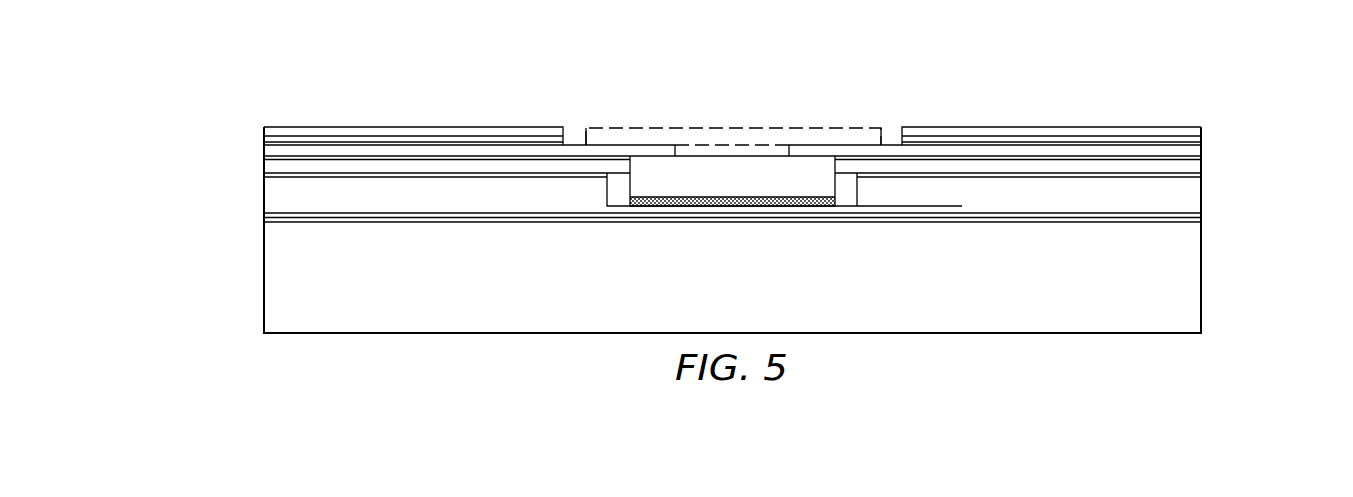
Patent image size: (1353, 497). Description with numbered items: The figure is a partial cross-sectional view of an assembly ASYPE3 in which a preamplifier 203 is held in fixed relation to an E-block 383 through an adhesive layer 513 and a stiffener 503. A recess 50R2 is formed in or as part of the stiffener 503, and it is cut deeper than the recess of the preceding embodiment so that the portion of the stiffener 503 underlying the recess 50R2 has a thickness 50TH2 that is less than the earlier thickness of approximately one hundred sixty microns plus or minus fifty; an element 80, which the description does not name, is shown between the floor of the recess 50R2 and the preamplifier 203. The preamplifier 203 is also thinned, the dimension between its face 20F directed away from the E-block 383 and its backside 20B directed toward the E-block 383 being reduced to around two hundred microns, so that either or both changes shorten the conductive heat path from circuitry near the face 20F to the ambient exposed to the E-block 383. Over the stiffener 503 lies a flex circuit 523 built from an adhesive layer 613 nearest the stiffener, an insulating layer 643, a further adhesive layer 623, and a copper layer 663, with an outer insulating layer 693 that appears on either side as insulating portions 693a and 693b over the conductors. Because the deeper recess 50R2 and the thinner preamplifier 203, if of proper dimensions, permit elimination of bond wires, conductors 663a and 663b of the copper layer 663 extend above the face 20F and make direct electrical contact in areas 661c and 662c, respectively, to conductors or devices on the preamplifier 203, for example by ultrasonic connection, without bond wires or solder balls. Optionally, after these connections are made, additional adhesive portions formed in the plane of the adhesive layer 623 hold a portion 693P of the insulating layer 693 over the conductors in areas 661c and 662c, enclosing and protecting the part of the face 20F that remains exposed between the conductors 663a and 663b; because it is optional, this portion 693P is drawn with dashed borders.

The E-block 383 is at (753, 318).
The adhesive layer 513 is at (354, 222).
The stiffener 503 is at (273, 205).
The recess 50R2 is at (618, 197).
The thickness 50TH2 is at (949, 163).
The adhesive layer 80 is at (688, 207).
The backside 20B is at (775, 207).
The preamplifier 203 is at (774, 165).
The face 20F is at (711, 152).
The adhesive layer 613 is at (1203, 175).
The adhesive layer 623 is at (1203, 141).
The flex circuit 523 is at (1291, 125).
The insulating layer 643 is at (275, 166).
The copper layer 663 is at (170, 151).
The conductor 663a is at (274, 151).
The area 661c is at (483, 148).
The area 662c is at (975, 150).
The conductor 663b is at (1143, 150).
The insulating layer portion 693a is at (352, 130).
The insulating layer portion 693b is at (1060, 130).
The portion of insulating layer 693P is at (625, 130).
The insulating layer 693 is at (170, 133).
The assembly ASYPE3 is at (879, 72).